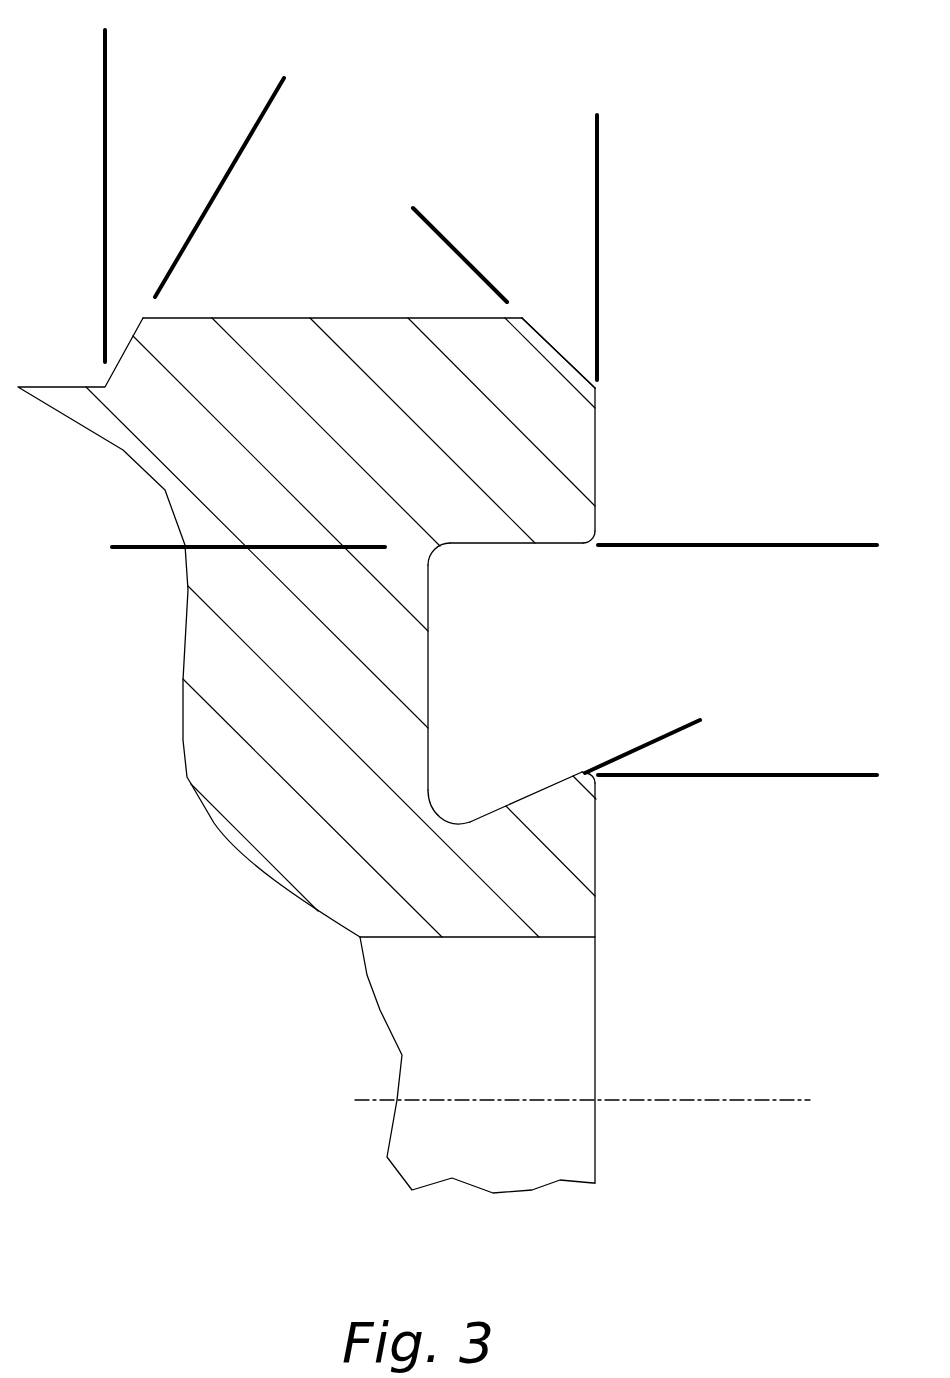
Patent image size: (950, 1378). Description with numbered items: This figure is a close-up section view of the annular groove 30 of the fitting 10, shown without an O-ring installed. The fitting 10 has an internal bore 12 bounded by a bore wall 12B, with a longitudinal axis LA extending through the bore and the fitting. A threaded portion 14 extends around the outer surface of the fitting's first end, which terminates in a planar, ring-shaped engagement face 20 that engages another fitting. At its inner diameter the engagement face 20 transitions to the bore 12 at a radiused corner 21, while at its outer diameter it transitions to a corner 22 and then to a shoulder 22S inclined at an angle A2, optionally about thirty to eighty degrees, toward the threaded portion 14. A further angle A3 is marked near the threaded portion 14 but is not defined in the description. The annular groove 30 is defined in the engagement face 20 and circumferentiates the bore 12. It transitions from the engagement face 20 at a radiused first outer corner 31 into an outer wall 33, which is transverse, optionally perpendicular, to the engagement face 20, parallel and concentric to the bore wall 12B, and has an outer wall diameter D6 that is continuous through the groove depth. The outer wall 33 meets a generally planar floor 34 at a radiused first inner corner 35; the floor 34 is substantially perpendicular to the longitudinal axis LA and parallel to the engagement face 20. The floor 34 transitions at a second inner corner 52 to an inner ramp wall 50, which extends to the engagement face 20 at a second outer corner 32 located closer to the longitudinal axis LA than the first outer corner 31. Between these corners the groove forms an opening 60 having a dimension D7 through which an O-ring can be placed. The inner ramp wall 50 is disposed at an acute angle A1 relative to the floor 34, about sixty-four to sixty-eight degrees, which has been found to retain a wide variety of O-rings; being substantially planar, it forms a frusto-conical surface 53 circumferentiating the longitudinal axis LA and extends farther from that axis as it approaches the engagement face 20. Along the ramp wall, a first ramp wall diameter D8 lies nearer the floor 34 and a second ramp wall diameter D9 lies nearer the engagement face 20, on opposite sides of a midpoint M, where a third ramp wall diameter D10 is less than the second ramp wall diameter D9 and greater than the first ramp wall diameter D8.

The fitting 10 is at (0, 0).
The internal bore 12 is at (405, 1013).
The bore wall 12B is at (448, 936).
The threaded portion 14 is at (343, 318).
The engagement face 20 is at (597, 458).
The corner 21 is at (597, 940).
The corner 22 is at (596, 386).
The shoulder 22S is at (540, 332).
The annular groove 30 is at (528, 672).
The first outer corner 31 is at (598, 541).
The second outer corner 32 is at (590, 778).
The outer wall 33 is at (505, 545).
The floor 34 is at (430, 692).
The first inner corner 35 is at (428, 553).
The inner ramp wall 50 is at (527, 787).
The second inner corner 52 is at (440, 814).
The frusto-conical surface 53 is at (485, 747).
The opening 60 is at (550, 706).
The midpoint M is at (517, 795).
The longitudinal axis LA is at (789, 1100).
The angle A1 is at (564, 678).
The inclined angle A2 is at (505, 247).
The upper flank angle A3 is at (194, 196).
The outer wall diameter D6 is at (248, 882).
The dimension D7 is at (737, 660).
The first ramp wall diameter D8 is at (469, 1019).
The second ramp wall diameter D9 is at (568, 1000).
The third ramp wall diameter D10 is at (519, 1018).